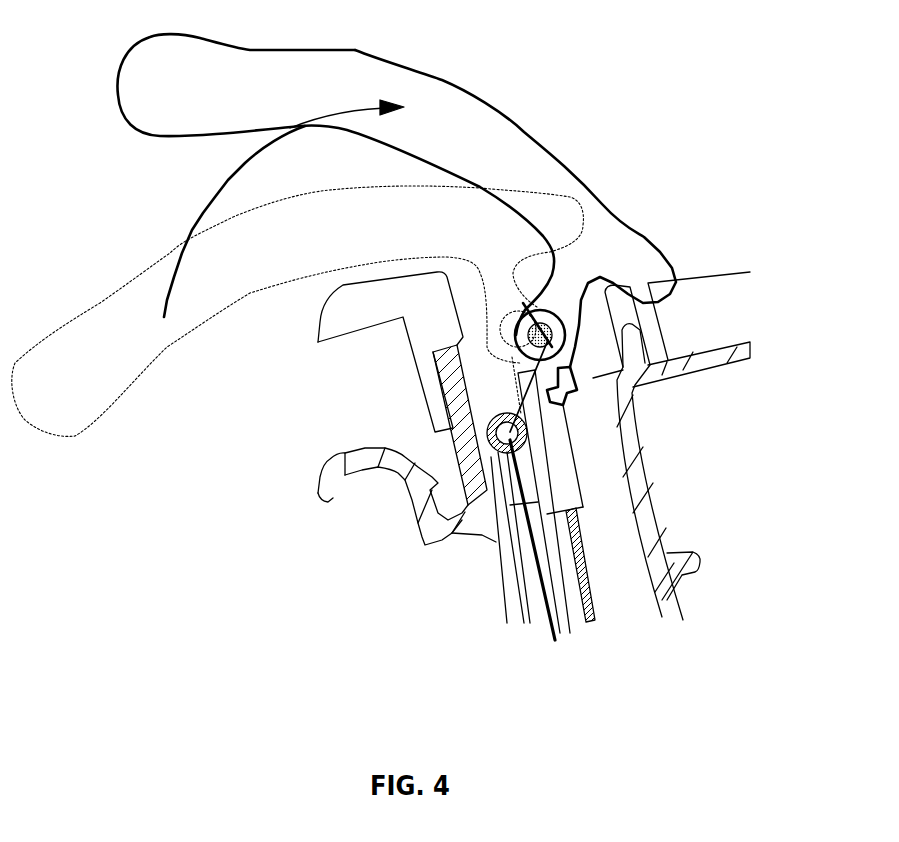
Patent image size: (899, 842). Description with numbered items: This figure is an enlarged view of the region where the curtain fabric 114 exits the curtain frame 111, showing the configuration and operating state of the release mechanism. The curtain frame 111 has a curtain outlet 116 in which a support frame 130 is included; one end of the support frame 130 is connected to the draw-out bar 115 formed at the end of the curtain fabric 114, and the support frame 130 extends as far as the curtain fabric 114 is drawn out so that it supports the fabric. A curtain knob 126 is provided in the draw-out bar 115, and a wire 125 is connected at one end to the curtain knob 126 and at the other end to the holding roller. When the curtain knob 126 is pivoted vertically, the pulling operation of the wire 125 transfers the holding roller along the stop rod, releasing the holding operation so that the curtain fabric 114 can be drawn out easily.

The curtain frame 111 is at (662, 533).
The curtain fabric 114 is at (580, 621).
The draw-out bar 115 is at (562, 452).
The curtain outlet 116 is at (620, 596).
The wire 125 is at (533, 549).
The curtain knob 126 is at (602, 214).
The support frame 130 is at (533, 596).